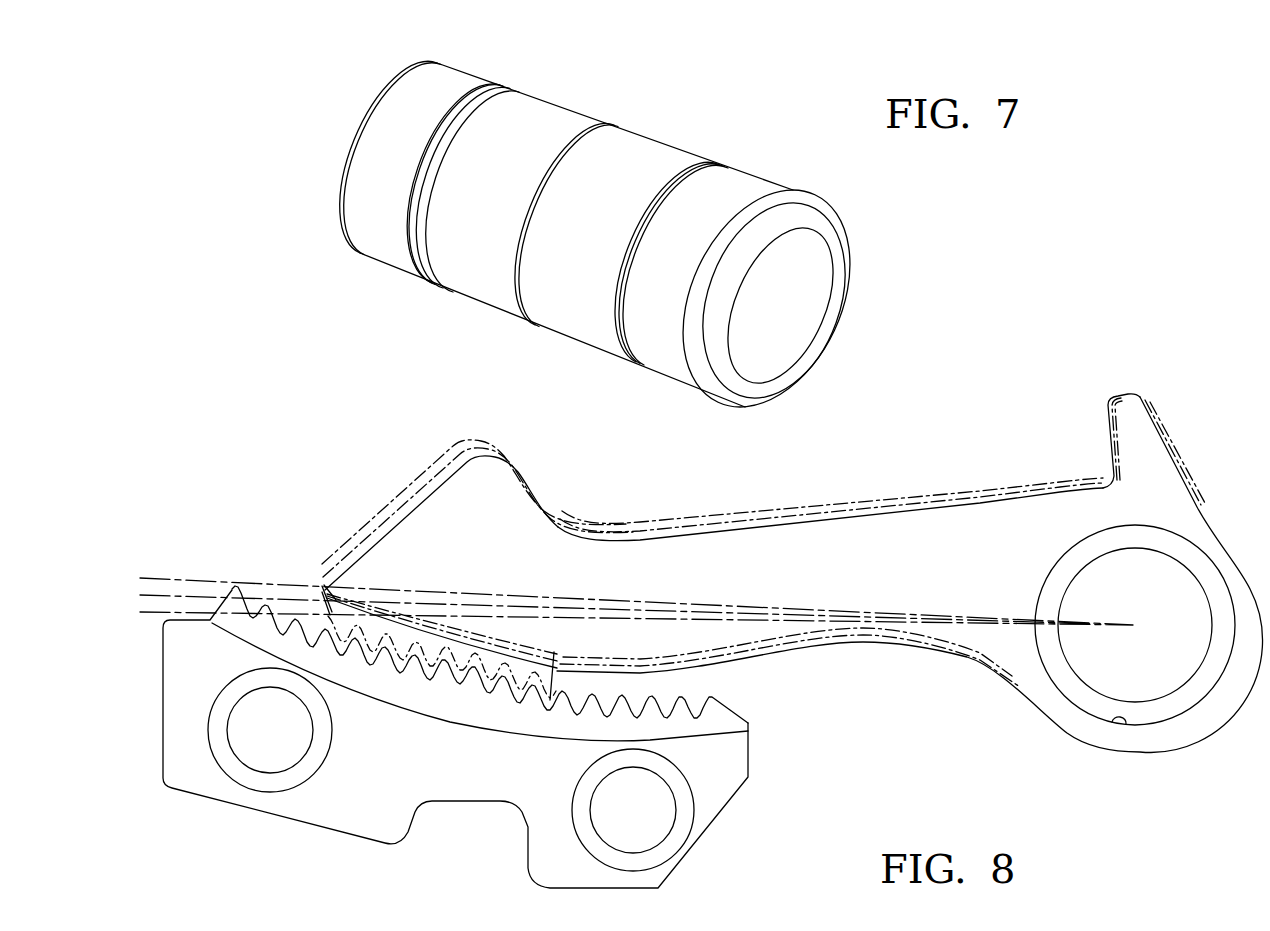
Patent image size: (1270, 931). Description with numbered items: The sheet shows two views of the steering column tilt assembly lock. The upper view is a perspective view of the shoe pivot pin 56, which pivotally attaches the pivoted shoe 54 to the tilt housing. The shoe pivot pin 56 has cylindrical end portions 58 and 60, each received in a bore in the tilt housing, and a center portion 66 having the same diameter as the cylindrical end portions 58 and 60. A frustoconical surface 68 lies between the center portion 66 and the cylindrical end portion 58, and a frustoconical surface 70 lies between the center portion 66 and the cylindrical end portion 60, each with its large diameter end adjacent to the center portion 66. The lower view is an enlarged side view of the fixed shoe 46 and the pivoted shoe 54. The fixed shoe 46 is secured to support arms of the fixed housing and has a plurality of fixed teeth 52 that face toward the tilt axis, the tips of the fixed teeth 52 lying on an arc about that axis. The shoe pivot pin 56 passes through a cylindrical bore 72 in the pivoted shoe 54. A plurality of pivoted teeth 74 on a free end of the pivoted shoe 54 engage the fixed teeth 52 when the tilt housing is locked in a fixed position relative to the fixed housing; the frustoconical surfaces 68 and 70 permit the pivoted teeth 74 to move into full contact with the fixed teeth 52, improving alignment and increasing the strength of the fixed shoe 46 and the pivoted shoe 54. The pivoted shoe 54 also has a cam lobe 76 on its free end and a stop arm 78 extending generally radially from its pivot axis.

In FIG. 8, the fixed shoe 46 is at (498, 790).
In FIG. 8, the fixed teeth 52 is at (235, 597).
In FIG. 8, the pivoted shoe 54 is at (790, 538).
In FIG. 7, the shoe pivot pin 56 is at (372, 95).
In FIG. 8, the shoe pivot pin 56 is at (1163, 660).
In FIG. 7, the cylindrical end portion 58 is at (402, 268).
In FIG. 7, the cylindrical end portion 60 is at (750, 183).
In FIG. 7, the center portion 66 is at (530, 318).
In FIG. 7, the frustoconical surface 68 is at (572, 120).
In FIG. 7, the frustoconical surface 70 is at (652, 148).
In FIG. 8, the cylindrical bore 72 is at (1113, 730).
In FIG. 8, the pivoted teeth 74 is at (333, 640).
In FIG. 8, the cam lobe 76 is at (467, 462).
In FIG. 8, the stop arm 78 is at (1133, 395).